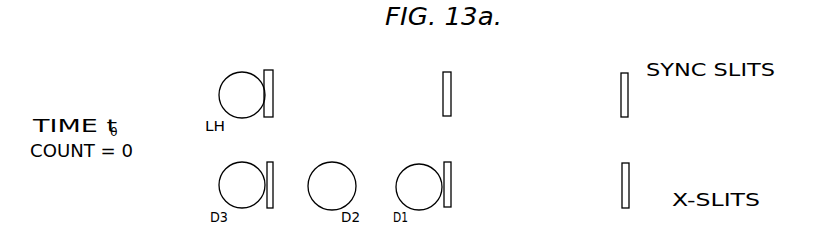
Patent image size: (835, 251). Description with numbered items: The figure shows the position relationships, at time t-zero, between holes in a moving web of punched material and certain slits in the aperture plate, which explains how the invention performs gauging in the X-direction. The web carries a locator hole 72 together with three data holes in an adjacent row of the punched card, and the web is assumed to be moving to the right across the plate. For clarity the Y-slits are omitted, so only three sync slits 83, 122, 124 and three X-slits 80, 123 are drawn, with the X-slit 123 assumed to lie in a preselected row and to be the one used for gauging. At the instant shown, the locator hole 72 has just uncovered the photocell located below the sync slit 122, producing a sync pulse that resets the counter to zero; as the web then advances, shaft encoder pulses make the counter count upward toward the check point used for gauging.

The locator hole 72 is at (230, 74).
The sync slit 122 is at (270, 70).
The sync slit 124 is at (448, 72).
The sync slit 83 is at (625, 73).
The X-slit 80 is at (270, 208).
The X-slit 123 is at (448, 207).